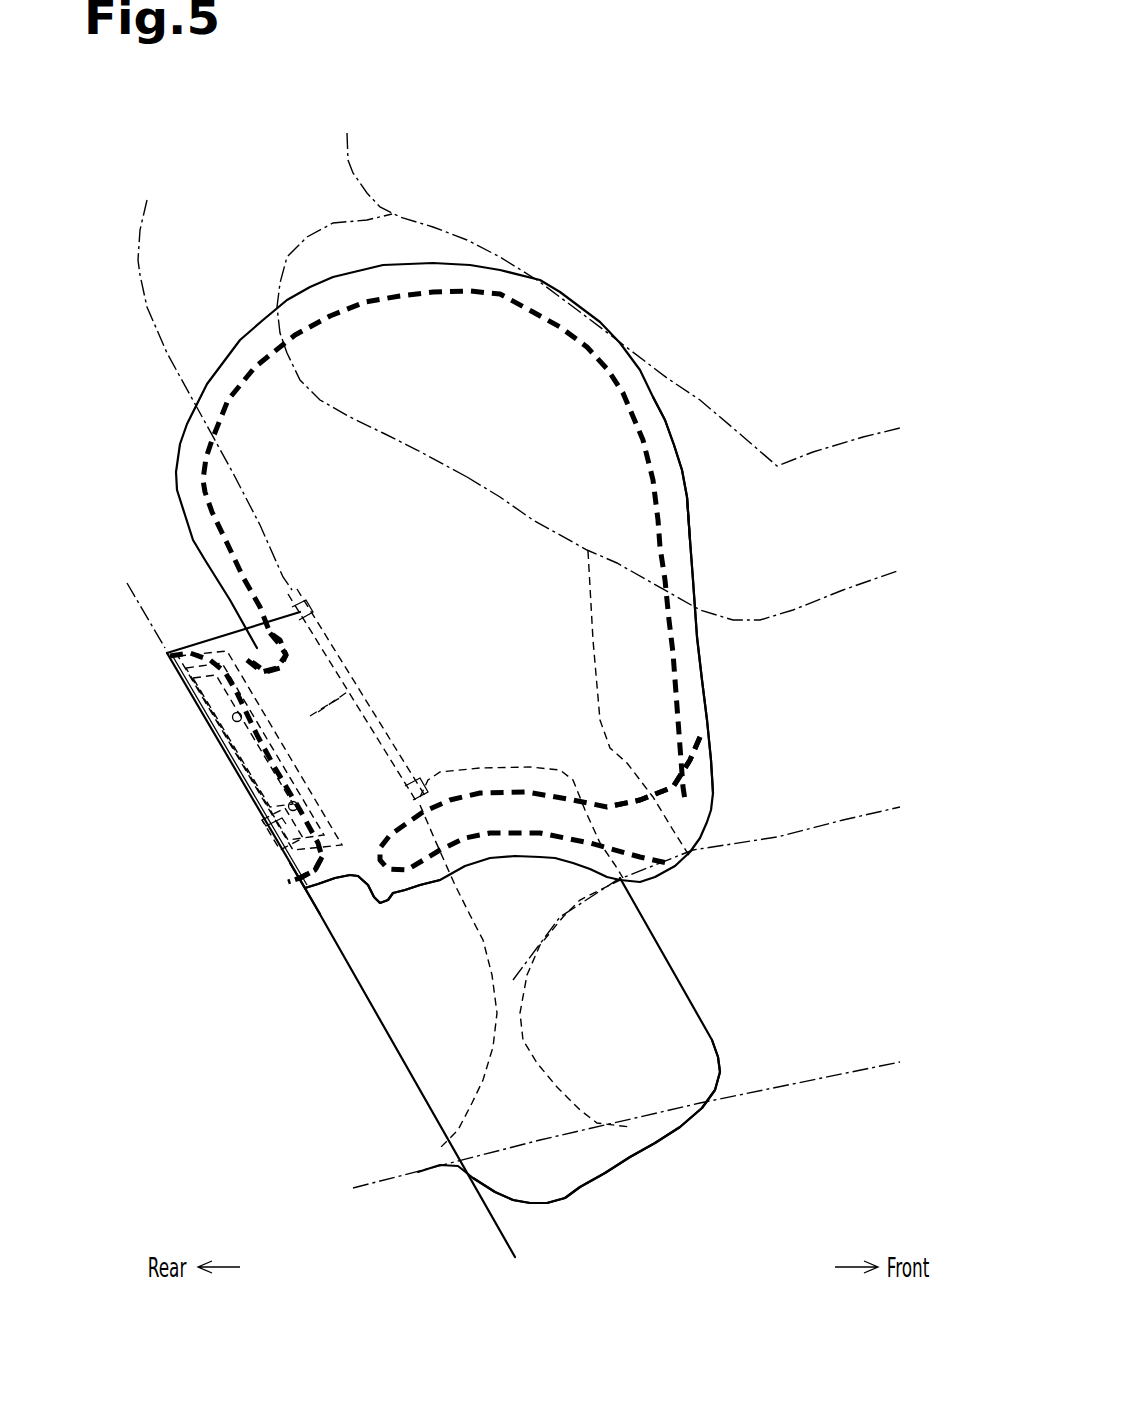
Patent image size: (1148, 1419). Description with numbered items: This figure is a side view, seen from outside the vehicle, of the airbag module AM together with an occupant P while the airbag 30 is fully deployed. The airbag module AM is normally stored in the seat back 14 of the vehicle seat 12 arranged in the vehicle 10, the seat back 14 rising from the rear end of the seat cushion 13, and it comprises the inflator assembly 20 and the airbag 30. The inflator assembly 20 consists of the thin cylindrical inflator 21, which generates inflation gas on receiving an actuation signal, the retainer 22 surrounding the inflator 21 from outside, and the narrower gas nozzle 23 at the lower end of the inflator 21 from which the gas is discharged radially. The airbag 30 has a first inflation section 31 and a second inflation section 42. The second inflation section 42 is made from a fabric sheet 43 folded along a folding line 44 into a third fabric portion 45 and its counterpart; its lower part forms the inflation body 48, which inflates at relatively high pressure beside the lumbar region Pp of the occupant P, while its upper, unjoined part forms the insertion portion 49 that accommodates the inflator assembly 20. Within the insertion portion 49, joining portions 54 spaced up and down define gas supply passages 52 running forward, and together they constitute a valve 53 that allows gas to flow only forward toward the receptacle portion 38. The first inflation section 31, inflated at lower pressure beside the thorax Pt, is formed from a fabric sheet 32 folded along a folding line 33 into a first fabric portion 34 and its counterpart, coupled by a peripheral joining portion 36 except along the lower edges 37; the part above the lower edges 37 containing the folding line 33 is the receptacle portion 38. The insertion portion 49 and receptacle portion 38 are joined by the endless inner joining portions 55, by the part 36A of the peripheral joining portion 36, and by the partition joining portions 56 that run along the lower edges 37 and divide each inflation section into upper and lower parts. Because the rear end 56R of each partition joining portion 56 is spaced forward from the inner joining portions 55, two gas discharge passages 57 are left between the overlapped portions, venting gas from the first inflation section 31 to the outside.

The vehicle 10 is at (445, 888).
The vehicle seat 12 is at (435, 586).
The seat back 14 is at (218, 460).
The seat cushion 13 is at (803, 1080).
The inflator assembly 20 is at (305, 833).
The inflator 21 is at (217, 748).
The retainer 22 is at (247, 780).
The gas nozzle 23 is at (277, 833).
The airbag 30 is at (492, 737).
The first inflation section 31 is at (684, 858).
The fabric sheet 32 is at (687, 643).
The folding line 33 is at (152, 623).
The first fabric portion 34 is at (747, 645).
The peripheral joining portion 36 is at (657, 479).
The part of the peripheral joining portions 36A is at (283, 615).
The lower edges 37 is at (340, 919).
The receptacle portion 38 is at (305, 897).
The second inflation section 42 is at (650, 945).
The fabric sheet 43 is at (620, 1157).
The folding line 44 is at (497, 1223).
The third fabric portion 45 is at (596, 1126).
The inflation body 48 is at (464, 773).
The insertion portion 49 is at (320, 649).
The gas supply passages 52 is at (370, 744).
The valve 53 is at (348, 615).
The joining portions 54 is at (380, 747).
The inner joining portions 55 is at (290, 868).
The partition joining portions 56 is at (618, 803).
The rear end of partition joining portion 56R is at (375, 878).
The gas discharge passages 57 is at (354, 890).
The occupant P is at (353, 172).
The thorax Pt is at (600, 653).
The lumbar region Pp is at (507, 1013).
The airbag module AM is at (234, 1080).